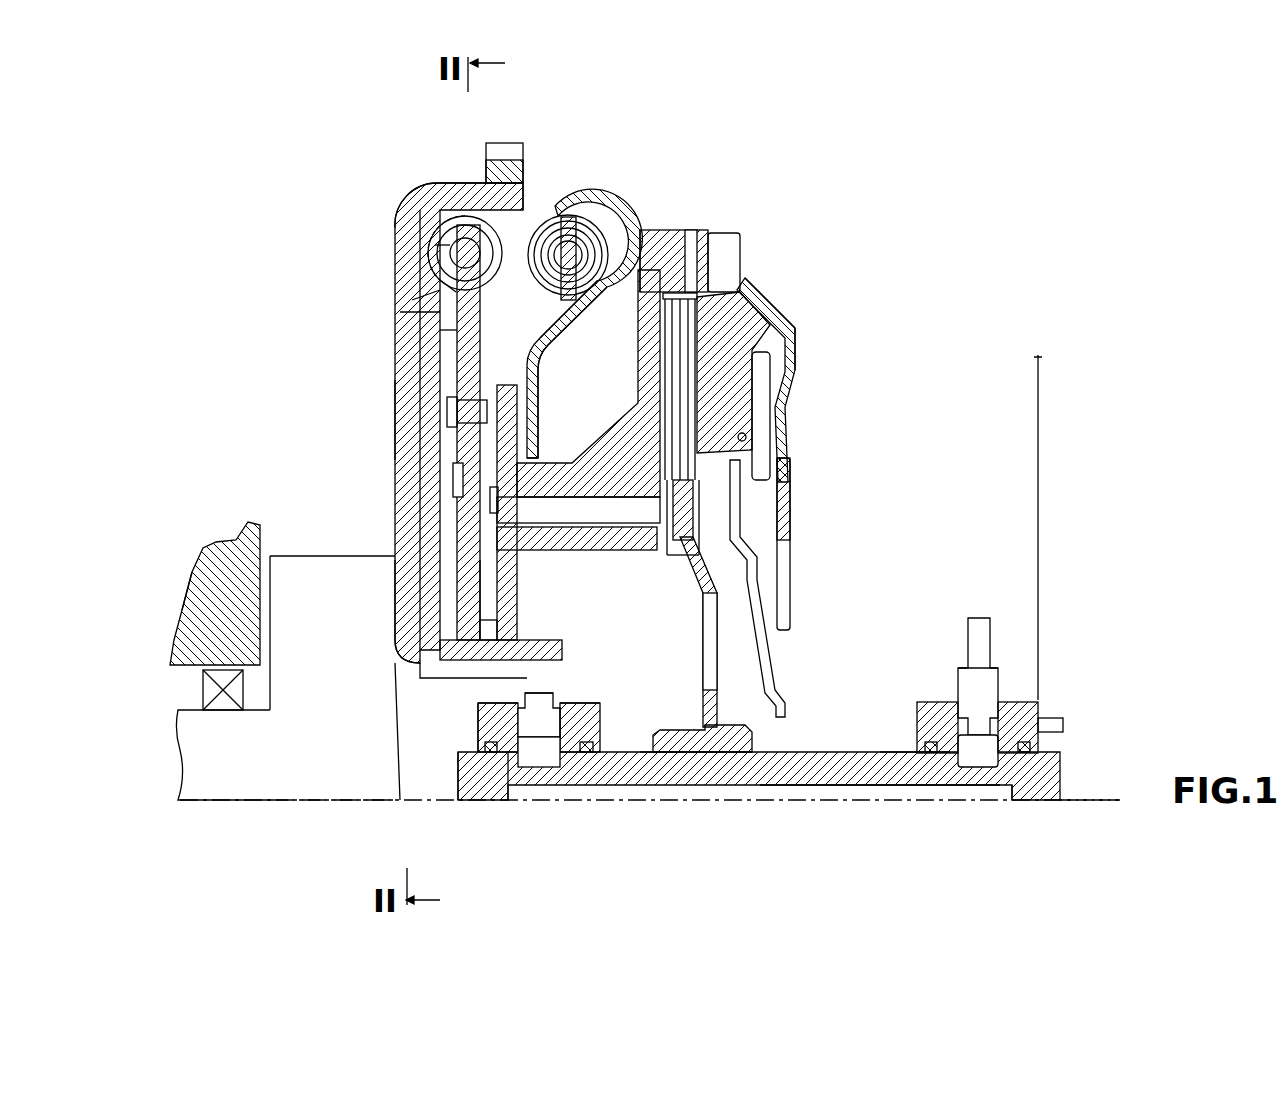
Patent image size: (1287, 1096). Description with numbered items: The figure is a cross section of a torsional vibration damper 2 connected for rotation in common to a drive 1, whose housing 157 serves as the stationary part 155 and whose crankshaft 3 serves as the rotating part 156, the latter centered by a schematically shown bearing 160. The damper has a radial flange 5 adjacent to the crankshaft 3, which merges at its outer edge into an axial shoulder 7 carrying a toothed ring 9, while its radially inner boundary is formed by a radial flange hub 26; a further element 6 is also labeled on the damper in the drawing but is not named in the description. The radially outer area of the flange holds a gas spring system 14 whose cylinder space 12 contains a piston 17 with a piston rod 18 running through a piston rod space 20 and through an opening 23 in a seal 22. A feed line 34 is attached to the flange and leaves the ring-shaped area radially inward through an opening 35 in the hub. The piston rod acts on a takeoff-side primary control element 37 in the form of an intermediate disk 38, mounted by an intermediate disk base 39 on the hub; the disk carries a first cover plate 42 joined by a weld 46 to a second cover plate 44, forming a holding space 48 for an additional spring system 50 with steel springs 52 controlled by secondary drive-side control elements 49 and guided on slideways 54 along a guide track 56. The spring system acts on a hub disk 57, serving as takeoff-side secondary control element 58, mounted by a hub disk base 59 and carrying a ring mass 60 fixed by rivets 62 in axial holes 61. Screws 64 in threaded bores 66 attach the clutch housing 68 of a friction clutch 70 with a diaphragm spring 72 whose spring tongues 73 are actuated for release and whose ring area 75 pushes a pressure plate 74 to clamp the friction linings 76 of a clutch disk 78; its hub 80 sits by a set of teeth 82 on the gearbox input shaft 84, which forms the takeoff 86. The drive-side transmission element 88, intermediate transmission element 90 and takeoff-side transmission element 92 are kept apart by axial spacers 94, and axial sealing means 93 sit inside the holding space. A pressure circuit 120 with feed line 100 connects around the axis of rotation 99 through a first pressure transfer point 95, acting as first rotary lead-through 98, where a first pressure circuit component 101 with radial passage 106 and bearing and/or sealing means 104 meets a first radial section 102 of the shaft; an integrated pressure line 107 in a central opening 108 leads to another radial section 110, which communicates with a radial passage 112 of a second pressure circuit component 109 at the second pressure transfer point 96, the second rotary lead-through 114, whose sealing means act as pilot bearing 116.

The drive 1 is at (250, 773).
The torsional vibration damper 2 is at (440, 160).
The crankshaft 3 is at (200, 798).
The radial flange 5 is at (398, 626).
The housing top 6 is at (437, 200).
The axial shoulder 7 is at (528, 200).
The toothed ring 9 is at (497, 160).
The cylinder space 12 is at (430, 228).
The gas spring system 14 is at (400, 300).
The piston 17 is at (420, 238).
The piston rod 18 is at (430, 265).
The piston rod space 20 is at (425, 280).
The seal 22 is at (396, 311).
The opening 23 is at (440, 240).
The radial flange hub 26 is at (397, 792).
The feed line 34 is at (405, 435).
The opening 35 is at (403, 678).
The takeoff-side primary control element 37 is at (420, 335).
The intermediate disk 38 is at (463, 548).
The intermediate disk base 39 is at (462, 606).
The first cover plate 42 is at (548, 205).
The second cover plate 44 is at (648, 228).
The weld 46 is at (572, 230).
The holding space 48 is at (582, 322).
The secondary drive-side control elements 49 is at (610, 250).
The additional spring system 50 is at (590, 215).
The steel springs 52 is at (432, 352).
The slideways 54 is at (540, 232).
The guide track 56 is at (600, 236).
The hub disk 57 is at (506, 630).
The takeoff-side secondary control element 58 is at (568, 523).
The hub disk base 59 is at (528, 740).
The ring mass 60 is at (626, 550).
The axial holes 61 is at (670, 556).
The rivets 62 is at (690, 458).
The screws 64 is at (738, 252).
The threaded bores 66 is at (652, 270).
The clutch housing 68 is at (790, 334).
The friction clutch 70 is at (808, 356).
The diaphragm spring 72 is at (770, 402).
The spring tongues 73 is at (786, 702).
The pressure plate 74 is at (740, 335).
The ring area 75 is at (777, 322).
The friction linings 76 is at (745, 441).
The clutch disk 78 is at (690, 538).
The hub 80 is at (725, 742).
The set of teeth 82 is at (672, 754).
The gearbox input shaft 84 is at (1040, 790).
The takeoff 86 is at (1072, 773).
The drive-side transmission element 88 is at (380, 417).
The intermediate transmission element 90 is at (455, 386).
The takeoff-side transmission element 92 is at (585, 373).
The axial sealing means 93 is at (540, 417).
The axial spacers 94 is at (452, 473).
The first pressure transfer point 95 is at (1048, 722).
The second pressure transfer point 96 is at (564, 765).
The first rotary lead-through 98 is at (1030, 748).
The axis of rotation 99 is at (1120, 802).
The feed line 100 is at (978, 625).
The first pressure circuit component 101 is at (1030, 705).
The first radial section 102 is at (938, 706).
The bearing and/or sealing means 104 is at (1022, 754).
The radial passage 106 is at (978, 727).
The integrated pressure line 107 is at (905, 795).
The central opening 108 is at (790, 790).
The second pressure circuit component 109 is at (640, 755).
The radial section 110 is at (540, 745).
The radial passage 112 is at (548, 715).
The second rotary lead-through 114 is at (485, 760).
The pilot bearing 116 is at (590, 708).
The pressure circuit 120 is at (996, 628).
The stationary part 155 is at (215, 548).
The rotating part 156 is at (297, 795).
The housing 157 is at (190, 615).
The bearing 160 is at (203, 690).